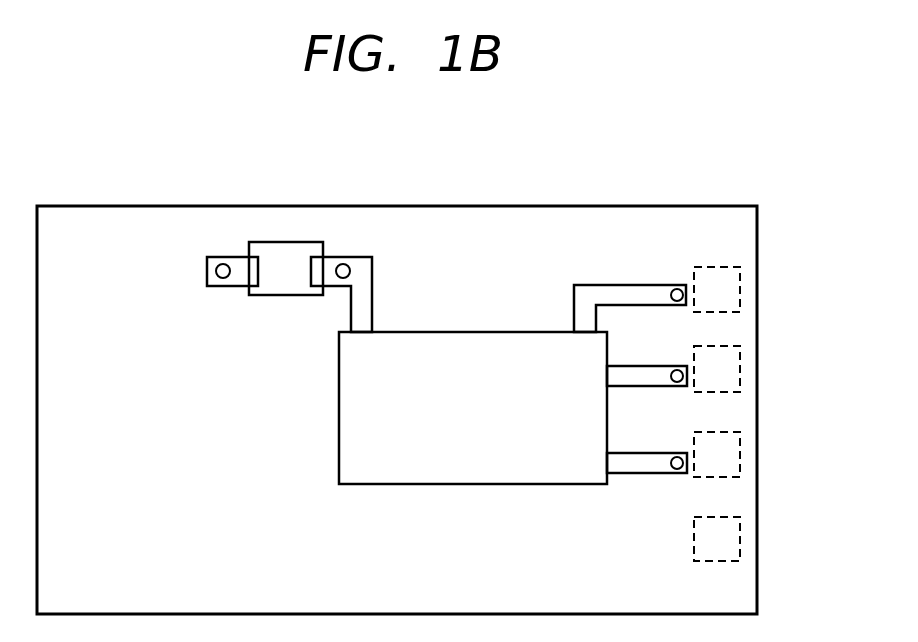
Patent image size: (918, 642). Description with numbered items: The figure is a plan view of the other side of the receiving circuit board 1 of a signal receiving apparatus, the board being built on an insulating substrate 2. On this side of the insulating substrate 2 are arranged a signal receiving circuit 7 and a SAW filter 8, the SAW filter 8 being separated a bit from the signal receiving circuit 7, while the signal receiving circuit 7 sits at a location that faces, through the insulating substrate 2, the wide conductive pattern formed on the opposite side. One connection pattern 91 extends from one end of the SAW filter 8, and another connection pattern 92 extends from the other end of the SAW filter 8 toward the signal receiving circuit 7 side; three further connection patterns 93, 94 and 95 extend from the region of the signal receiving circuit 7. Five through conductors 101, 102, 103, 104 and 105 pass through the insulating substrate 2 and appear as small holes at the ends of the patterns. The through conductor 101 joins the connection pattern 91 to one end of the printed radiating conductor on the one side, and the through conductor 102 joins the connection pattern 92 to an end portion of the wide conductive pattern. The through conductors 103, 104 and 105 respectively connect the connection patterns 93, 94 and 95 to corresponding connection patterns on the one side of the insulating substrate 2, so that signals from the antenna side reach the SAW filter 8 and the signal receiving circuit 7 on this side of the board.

The receiving circuit board 1 is at (392, 196).
The insulating substrate 2 is at (743, 247).
The signal receiving circuit 7 is at (468, 484).
The SAW filter 8 is at (275, 242).
The connection pattern 91 is at (220, 255).
The connection pattern 92 is at (365, 273).
The connection pattern 93 is at (608, 285).
The connection pattern 94 is at (640, 365).
The connection pattern 95 is at (650, 456).
The through conductor 101 is at (217, 272).
The through conductor 102 is at (333, 297).
The through conductor 103 is at (677, 289).
The through conductor 104 is at (678, 386).
The through conductor 105 is at (672, 467).